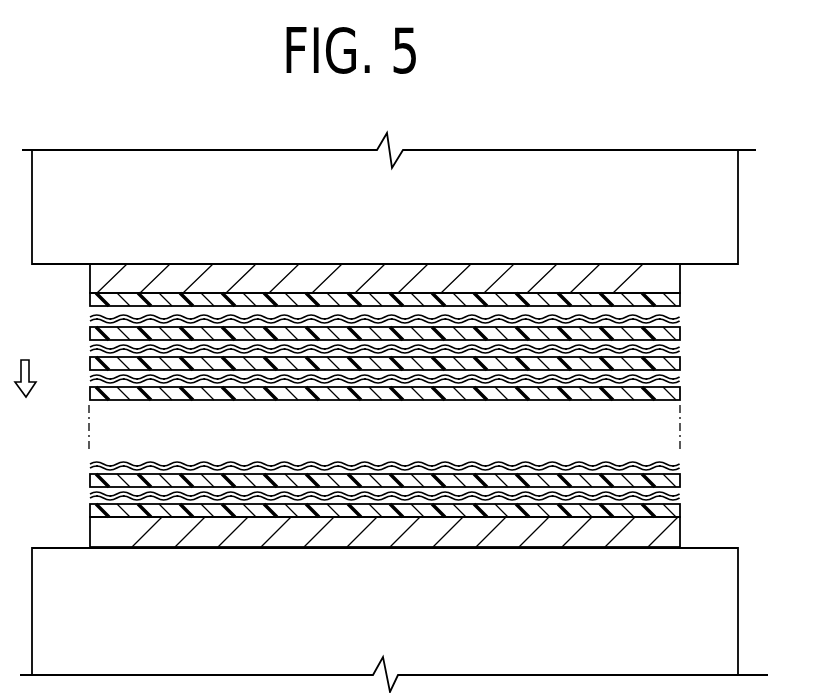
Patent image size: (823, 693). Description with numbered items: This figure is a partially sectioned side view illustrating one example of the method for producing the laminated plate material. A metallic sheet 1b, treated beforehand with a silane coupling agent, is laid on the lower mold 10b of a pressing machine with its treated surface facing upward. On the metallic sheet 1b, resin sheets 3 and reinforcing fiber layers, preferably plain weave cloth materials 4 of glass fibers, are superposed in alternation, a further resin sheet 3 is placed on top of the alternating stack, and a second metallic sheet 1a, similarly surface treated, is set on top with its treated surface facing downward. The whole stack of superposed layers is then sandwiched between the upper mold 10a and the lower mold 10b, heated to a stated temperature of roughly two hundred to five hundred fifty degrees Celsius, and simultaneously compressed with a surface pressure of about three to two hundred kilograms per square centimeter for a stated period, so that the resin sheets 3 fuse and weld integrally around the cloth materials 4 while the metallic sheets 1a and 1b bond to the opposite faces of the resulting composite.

The upper mold 10a is at (677, 169).
The lower mold 10b is at (723, 628).
The metallic sheet 1a is at (673, 281).
The metallic sheet 1b is at (675, 535).
The resin sheet 3 is at (677, 333).
The plain weave cloth material 4 is at (675, 346).